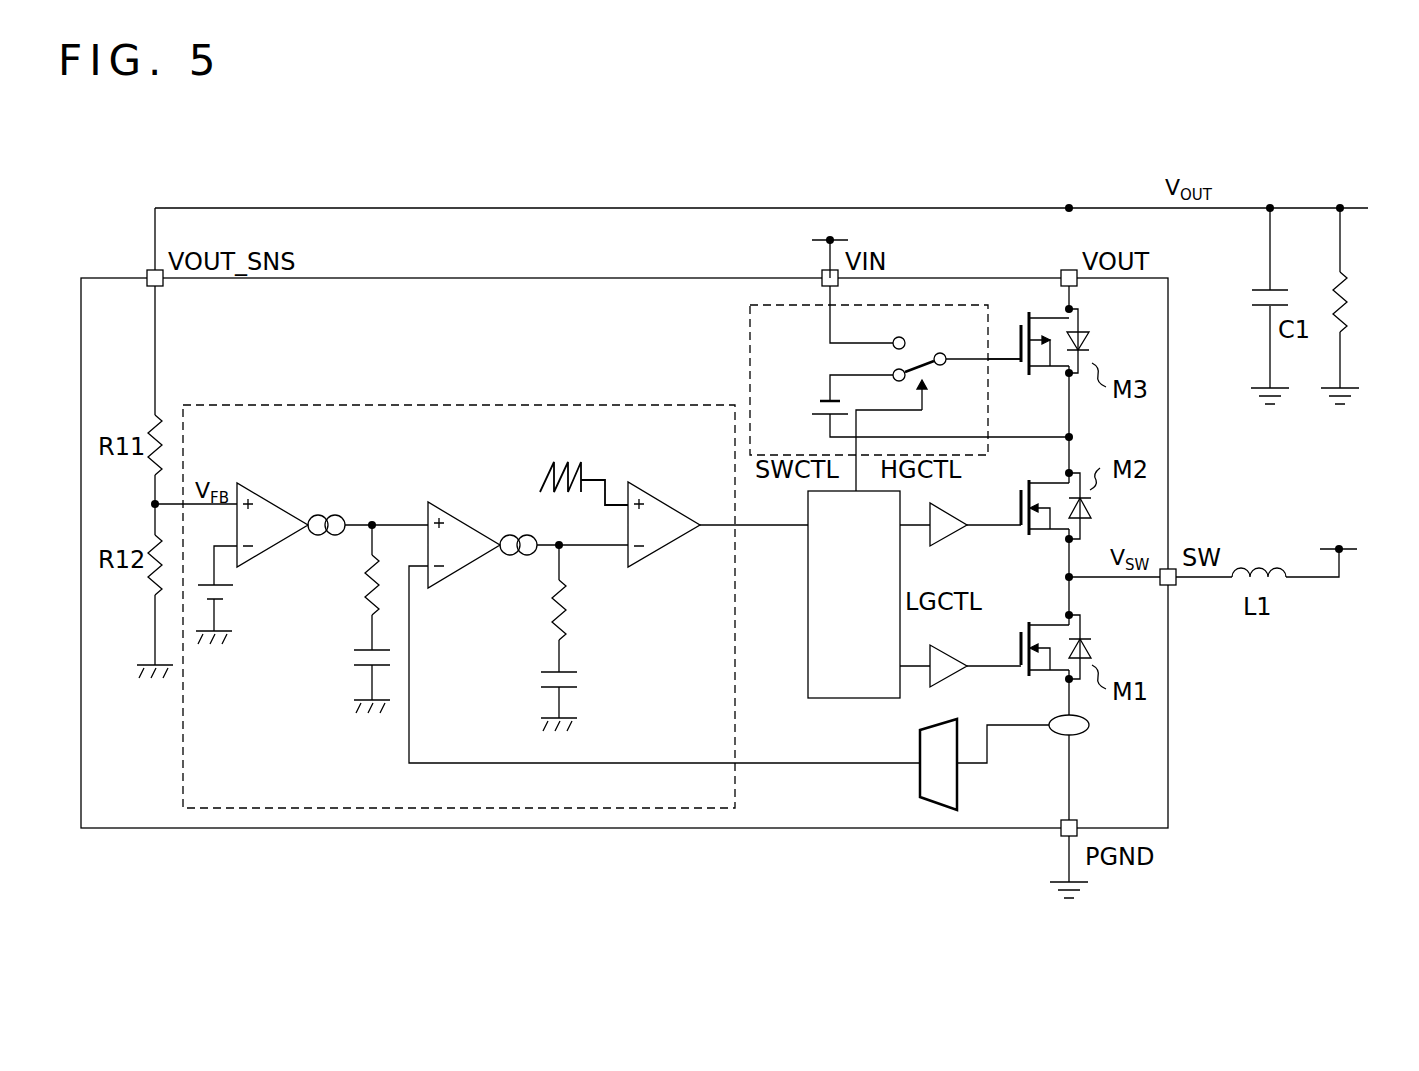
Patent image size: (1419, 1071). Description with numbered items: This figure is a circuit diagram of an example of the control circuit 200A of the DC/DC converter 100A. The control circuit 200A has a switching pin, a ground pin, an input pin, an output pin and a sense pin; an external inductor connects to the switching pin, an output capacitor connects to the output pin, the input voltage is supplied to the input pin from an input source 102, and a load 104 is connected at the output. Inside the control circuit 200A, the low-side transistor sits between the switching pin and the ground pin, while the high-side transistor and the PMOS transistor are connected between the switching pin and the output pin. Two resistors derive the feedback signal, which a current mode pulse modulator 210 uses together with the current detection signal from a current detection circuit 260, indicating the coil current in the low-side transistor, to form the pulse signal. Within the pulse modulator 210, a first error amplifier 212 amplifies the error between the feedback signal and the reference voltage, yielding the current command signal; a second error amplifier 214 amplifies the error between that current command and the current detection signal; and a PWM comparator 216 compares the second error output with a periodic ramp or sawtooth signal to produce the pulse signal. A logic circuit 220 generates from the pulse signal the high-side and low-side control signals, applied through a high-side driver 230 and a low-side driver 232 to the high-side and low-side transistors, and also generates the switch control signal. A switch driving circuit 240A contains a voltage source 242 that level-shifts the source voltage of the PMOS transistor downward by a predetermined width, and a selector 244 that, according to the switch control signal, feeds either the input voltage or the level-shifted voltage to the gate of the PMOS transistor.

The DC/DC converter 100A is at (1362, 77).
The input voltage source VIN terminal 102 is at (848, 238).
The load 104 is at (1356, 208).
The control circuit 200A is at (553, 278).
The pulse modulator 210 is at (425, 404).
The first error amplifier 212 is at (278, 471).
The second error amplifier 214 is at (469, 493).
The pulse width modulation (PWM) comparator 216 is at (667, 553).
The logic circuit 220 is at (855, 700).
The high-side driver 230 is at (950, 540).
The low-side driver 232 is at (950, 682).
The switch driving circuit 240A is at (746, 328).
The voltage source 242 is at (805, 408).
The selector 244 is at (920, 346).
The current detection circuit 260 is at (959, 795).